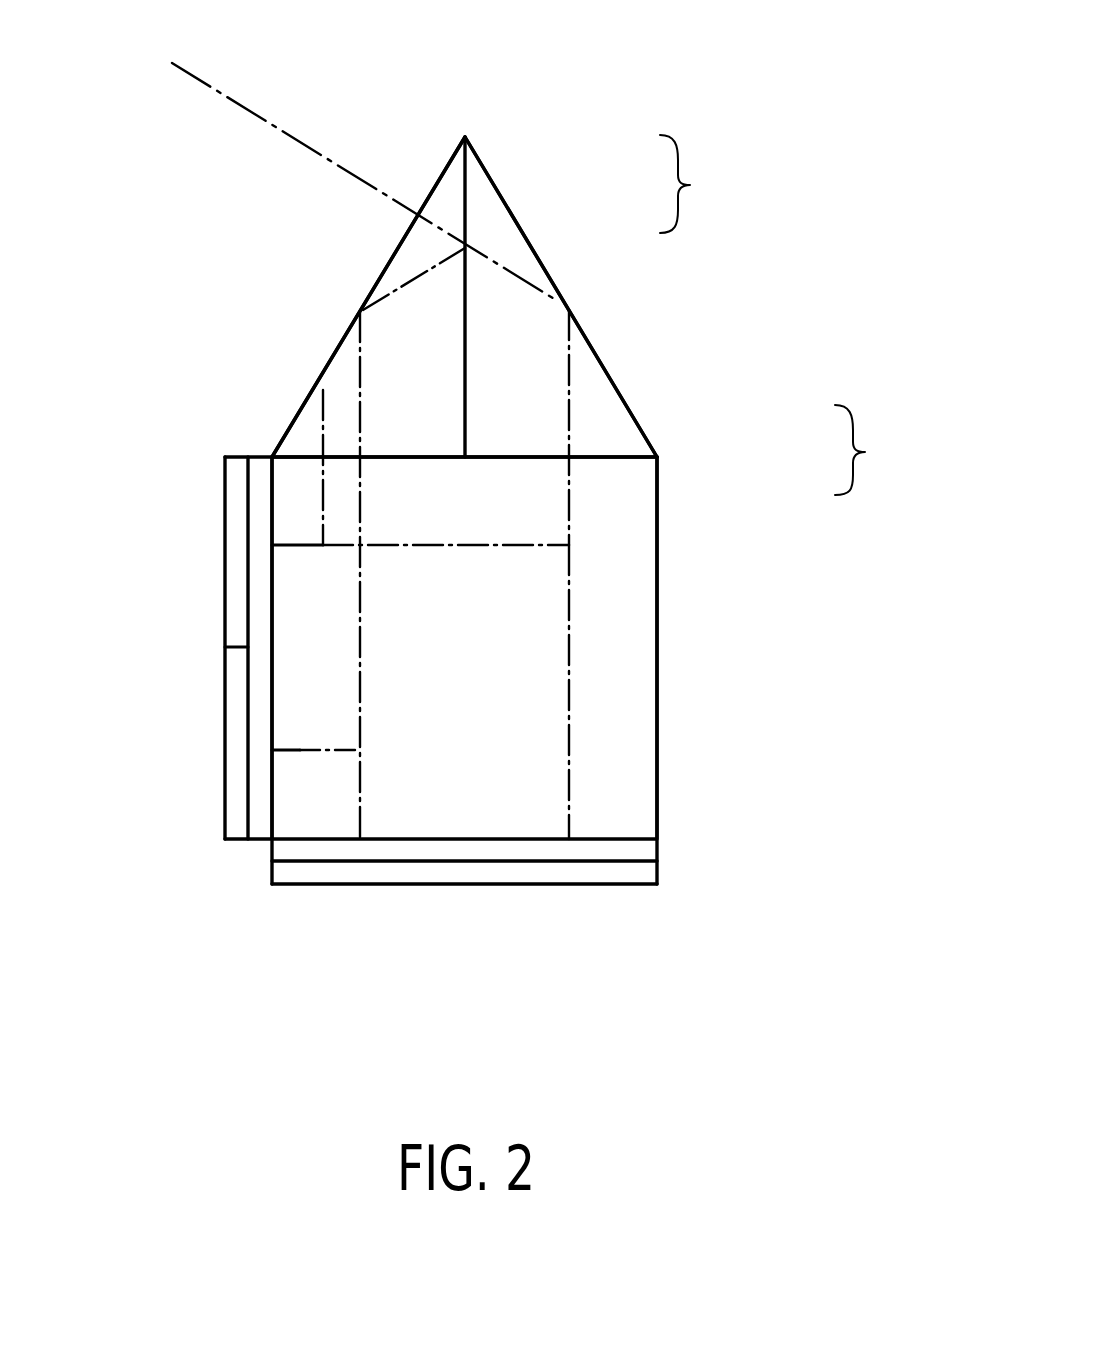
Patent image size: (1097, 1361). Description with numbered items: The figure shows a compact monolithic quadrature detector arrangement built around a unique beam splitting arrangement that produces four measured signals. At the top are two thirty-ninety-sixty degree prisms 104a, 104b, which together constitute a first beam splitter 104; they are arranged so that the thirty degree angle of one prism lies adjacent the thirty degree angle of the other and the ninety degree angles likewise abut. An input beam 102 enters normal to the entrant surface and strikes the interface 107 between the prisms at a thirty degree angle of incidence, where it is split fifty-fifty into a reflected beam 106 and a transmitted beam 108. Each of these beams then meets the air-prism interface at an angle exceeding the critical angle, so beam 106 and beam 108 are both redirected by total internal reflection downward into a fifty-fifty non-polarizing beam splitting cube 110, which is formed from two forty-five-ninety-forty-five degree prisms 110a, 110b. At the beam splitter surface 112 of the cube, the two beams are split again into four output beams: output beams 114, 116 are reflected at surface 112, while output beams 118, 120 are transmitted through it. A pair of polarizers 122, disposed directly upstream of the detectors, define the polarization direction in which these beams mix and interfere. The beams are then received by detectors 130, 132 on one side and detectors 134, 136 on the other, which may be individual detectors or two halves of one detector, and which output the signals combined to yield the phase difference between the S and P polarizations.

The input beam 102 is at (194, 78).
The first beam splitter 104 is at (706, 184).
The 30-90-60 prism 104a is at (443, 210).
The 30-90-60 prism 104b is at (488, 211).
The beam 106 is at (403, 280).
The interface 107 is at (467, 302).
The beam 108 is at (570, 357).
The non-polarizing beam splitting cube 110 is at (597, 622).
The 45-90-45 prism 110a is at (487, 503).
The 45-90-45 prism 110b is at (636, 540).
The beam splitter surface 112 is at (425, 688).
The output beam 114 is at (323, 390).
The output beam 116 is at (299, 752).
The output beam 118 is at (570, 644).
The output beam 120 is at (360, 802).
The polarizers 122 is at (283, 850).
The detector 130 is at (236, 546).
The detector 132 is at (235, 715).
The detector 134 is at (617, 875).
The detector 136 is at (310, 878).